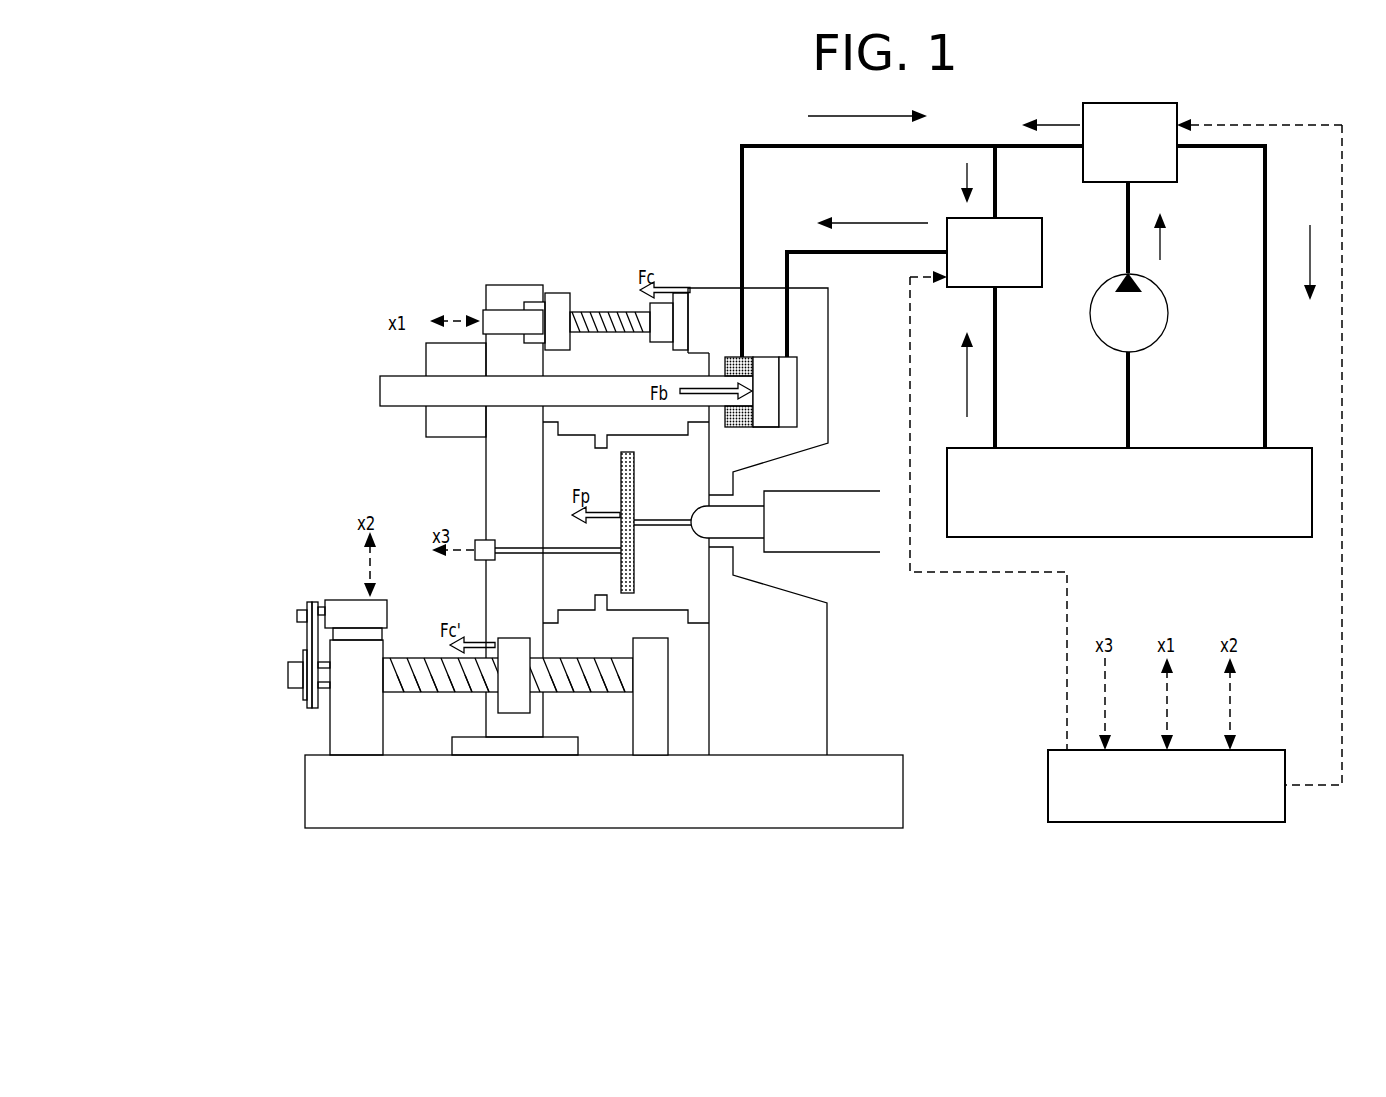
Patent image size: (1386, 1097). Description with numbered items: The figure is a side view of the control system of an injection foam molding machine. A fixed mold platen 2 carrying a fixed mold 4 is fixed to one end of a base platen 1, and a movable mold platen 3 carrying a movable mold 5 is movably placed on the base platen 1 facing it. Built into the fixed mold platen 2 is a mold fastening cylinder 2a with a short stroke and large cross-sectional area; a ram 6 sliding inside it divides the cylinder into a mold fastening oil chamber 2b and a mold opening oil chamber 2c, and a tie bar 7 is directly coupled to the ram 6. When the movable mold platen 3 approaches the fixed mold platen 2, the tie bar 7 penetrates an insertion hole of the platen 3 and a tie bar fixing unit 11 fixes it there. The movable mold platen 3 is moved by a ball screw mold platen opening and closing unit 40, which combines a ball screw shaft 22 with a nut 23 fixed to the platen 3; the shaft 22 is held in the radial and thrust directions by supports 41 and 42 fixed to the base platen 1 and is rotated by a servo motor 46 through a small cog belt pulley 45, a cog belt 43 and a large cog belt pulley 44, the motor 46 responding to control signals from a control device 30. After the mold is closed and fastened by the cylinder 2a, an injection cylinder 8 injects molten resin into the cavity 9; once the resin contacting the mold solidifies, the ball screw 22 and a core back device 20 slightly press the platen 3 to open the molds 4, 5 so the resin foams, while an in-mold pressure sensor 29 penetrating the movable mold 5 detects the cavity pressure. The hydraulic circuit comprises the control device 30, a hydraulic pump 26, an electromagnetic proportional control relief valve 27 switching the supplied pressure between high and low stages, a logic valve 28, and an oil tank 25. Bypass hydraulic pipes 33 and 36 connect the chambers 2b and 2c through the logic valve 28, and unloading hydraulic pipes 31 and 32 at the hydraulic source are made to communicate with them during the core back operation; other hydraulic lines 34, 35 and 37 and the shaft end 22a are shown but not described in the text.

The base platen 1 is at (878, 754).
The fixed mold platen 2 is at (828, 350).
The mold fastening cylinder 2a is at (787, 428).
The mold fastening oil chamber 2b is at (753, 357).
The mold opening oil chamber 2c is at (790, 390).
The movable mold platen 3 is at (503, 285).
The fixed mold 4 is at (672, 610).
The movable mold 5 is at (555, 470).
The ram 6 is at (770, 428).
The tie bar 7 is at (386, 376).
The injection cylinder 8 is at (833, 553).
The cavity 9 is at (628, 587).
The tie bar fixing unit 11 is at (426, 430).
The core back device 20 is at (582, 270).
The ball screw shaft 22 is at (425, 692).
The screw shaft end 22a is at (290, 678).
The nut 23 is at (493, 703).
The oil tank 25 is at (1240, 537).
The hydraulic pump 26 is at (1168, 325).
The electromagnetic proportional control relief valve 27 is at (1125, 103).
The logic valve 28 is at (1042, 255).
The in-mold pressure sensor 29 is at (475, 557).
The control device 30 is at (1267, 750).
The unloading hydraulic pipe 31 is at (1267, 345).
The unloading hydraulic pipe 32 is at (1131, 200).
The bypass hydraulic pipe 33 is at (813, 148).
The oil passage 34 is at (997, 380).
The oil passage 35 is at (1012, 146).
The bypass hydraulic pipe 36 is at (850, 254).
The oil passage 37 is at (997, 185).
The ball screw mold platen opening and closing unit 40 is at (432, 730).
The support 41 is at (633, 720).
The support 42 is at (330, 745).
The cog belt 43 is at (305, 640).
The large cog belt pulley 44 is at (305, 695).
The small cog belt pulley 45 is at (300, 610).
The servo motor 46 is at (350, 598).